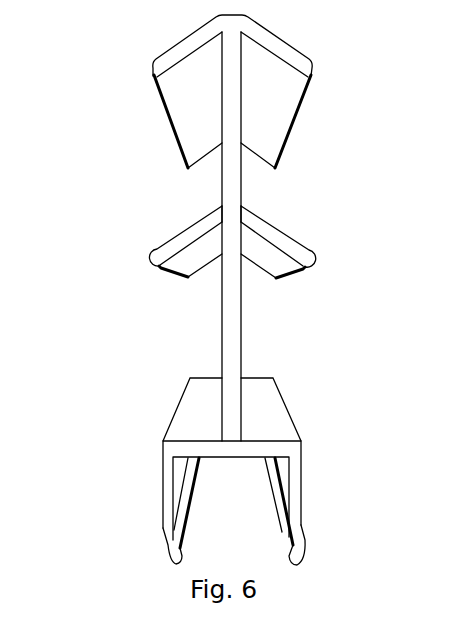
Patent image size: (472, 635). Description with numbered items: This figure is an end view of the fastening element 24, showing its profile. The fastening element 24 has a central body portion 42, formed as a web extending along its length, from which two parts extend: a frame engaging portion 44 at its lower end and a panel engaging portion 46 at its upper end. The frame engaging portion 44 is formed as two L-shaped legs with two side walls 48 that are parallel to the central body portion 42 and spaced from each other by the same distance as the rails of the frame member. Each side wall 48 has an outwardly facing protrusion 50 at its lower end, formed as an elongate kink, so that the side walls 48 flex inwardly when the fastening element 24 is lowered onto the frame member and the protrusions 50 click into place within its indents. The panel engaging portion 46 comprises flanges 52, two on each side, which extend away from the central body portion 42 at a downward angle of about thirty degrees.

The fastening element 24 is at (185, 57).
The central body portion 42 is at (222, 358).
The frame engaging portion 44 is at (170, 430).
The panel engaging portion 46 is at (243, 213).
The side walls 48 is at (168, 483).
The protrusion 50 is at (160, 541).
The flanges 52 is at (193, 123).